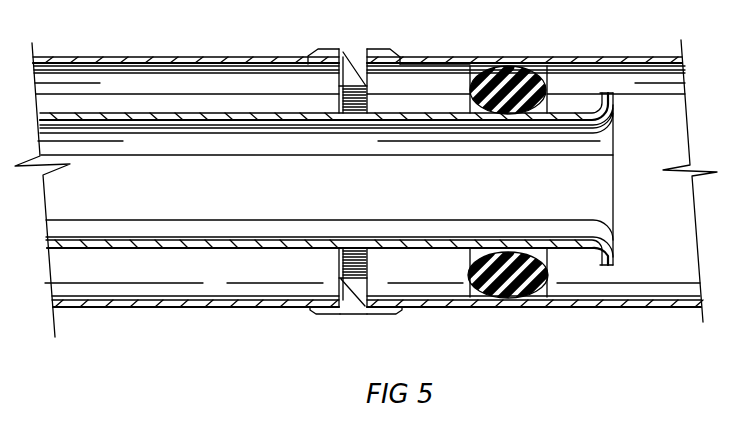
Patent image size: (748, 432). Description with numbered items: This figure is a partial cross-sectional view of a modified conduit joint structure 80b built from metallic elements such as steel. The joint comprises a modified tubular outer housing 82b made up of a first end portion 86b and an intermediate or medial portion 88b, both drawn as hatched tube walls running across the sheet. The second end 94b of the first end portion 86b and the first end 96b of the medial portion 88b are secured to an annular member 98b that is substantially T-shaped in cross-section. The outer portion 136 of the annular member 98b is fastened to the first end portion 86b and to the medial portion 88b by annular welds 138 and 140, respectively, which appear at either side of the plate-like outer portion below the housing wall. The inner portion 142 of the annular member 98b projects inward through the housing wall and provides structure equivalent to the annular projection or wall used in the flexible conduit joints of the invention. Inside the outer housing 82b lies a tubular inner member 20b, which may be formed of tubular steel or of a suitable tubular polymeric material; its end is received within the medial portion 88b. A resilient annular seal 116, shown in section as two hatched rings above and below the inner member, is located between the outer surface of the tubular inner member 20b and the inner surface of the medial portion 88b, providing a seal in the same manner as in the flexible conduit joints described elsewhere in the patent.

The first end portion 86b is at (76, 57).
The modified conduit joint structure 80b is at (467, 50).
The tubular outer housing 82b is at (556, 50).
The medial portion 88b is at (398, 54).
The first end of the medial portion 96b is at (405, 62).
The second end of the first end portion 94b is at (338, 76).
The annular member 98b is at (367, 78).
The tubular inner member 20b is at (340, 130).
The resilient annular seal 116 is at (548, 97).
The inner portion of the annular member 142 is at (344, 262).
The outer portion of the annular member 136 is at (339, 313).
The annular weld 138 is at (312, 311).
The annular weld 140 is at (402, 311).